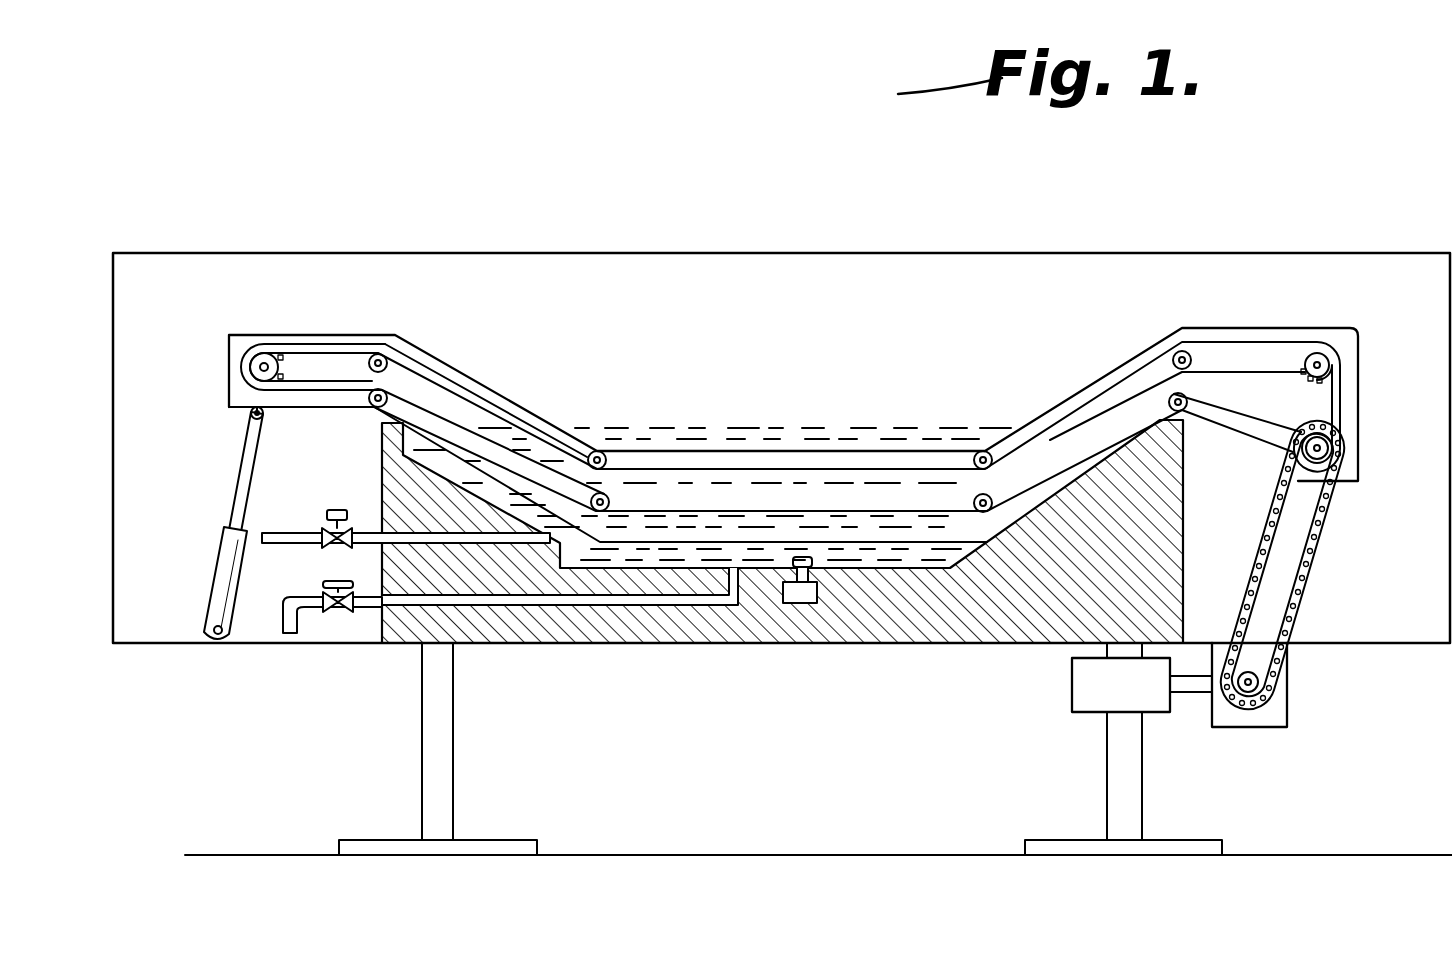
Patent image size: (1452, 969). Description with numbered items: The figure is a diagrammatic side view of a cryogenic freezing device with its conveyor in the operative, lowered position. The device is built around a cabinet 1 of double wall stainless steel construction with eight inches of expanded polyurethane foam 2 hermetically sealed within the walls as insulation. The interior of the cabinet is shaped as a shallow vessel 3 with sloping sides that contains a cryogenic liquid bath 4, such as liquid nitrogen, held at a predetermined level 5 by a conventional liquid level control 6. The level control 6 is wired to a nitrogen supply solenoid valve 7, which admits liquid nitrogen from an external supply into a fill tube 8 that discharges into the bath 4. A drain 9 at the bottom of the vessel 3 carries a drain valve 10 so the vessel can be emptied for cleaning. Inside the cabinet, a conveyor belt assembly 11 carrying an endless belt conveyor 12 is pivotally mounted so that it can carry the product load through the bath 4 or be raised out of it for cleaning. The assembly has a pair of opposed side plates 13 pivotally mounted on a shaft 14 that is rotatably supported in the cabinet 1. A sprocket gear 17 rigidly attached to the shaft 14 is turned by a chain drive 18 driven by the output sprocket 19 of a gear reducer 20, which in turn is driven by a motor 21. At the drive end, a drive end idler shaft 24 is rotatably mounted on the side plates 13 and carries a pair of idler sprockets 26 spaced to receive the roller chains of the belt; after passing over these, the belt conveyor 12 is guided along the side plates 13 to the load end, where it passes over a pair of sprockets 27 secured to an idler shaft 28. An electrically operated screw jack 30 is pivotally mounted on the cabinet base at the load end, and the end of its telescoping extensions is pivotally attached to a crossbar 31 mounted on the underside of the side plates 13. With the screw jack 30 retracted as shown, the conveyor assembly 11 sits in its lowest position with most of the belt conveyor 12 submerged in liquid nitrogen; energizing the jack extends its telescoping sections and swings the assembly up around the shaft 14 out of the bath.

The cabinet 1 is at (590, 652).
The expanded polyurethane foam 2 is at (975, 622).
The shallow vessel 3 is at (893, 555).
The cryogenic liquid bath 4 is at (795, 432).
The predetermined level 5 is at (975, 418).
The liquid level control 6 is at (797, 603).
The nitrogen supply solenoid valve 7 is at (337, 510).
The fill tube 8 is at (410, 537).
The drain 9 is at (685, 605).
The drain valve 10 is at (350, 582).
The conveyor belt assembly 11 is at (468, 358).
The endless belt conveyor 12 is at (490, 402).
The side plates 13 is at (548, 420).
The shaft 14 is at (1330, 449).
The sprocket gear 17 is at (1337, 440).
The chain drive 18 is at (1308, 602).
The output sprocket 19 is at (1272, 677).
The gear reducer 20 is at (1290, 712).
The motor 21 is at (1077, 690).
The drive end idler shaft 24 is at (1323, 352).
The idler sprockets 26 is at (1330, 366).
The sprockets 27 is at (288, 367).
The idler shaft 28 is at (270, 352).
The screw jack 30 is at (237, 470).
The crossbar 31 is at (250, 414).